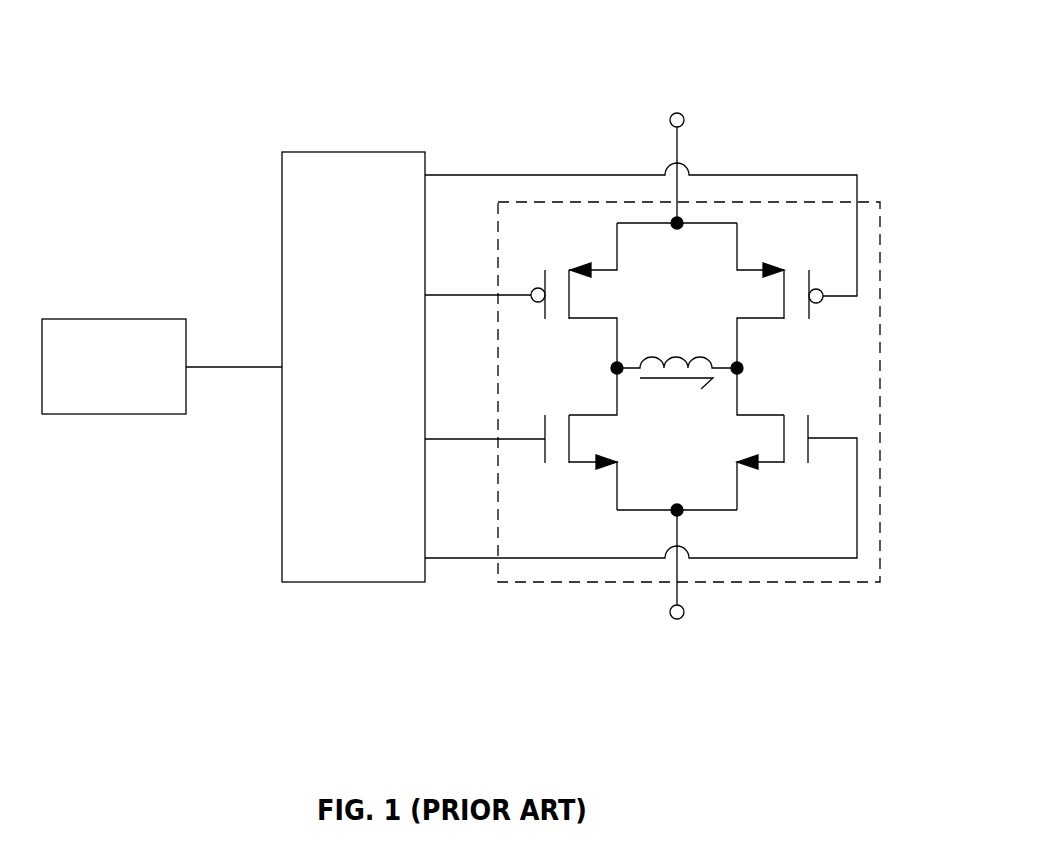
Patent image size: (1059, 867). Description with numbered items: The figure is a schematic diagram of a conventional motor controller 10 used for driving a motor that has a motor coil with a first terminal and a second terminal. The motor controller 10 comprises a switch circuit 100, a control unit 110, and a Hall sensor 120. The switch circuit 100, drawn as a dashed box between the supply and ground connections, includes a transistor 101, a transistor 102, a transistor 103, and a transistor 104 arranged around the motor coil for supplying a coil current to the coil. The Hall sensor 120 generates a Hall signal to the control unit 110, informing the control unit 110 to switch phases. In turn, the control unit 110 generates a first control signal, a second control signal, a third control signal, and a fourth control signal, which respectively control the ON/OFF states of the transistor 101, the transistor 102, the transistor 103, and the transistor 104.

The motor controller 10 is at (760, 32).
The switch circuit 100 is at (537, 585).
The transistor 101 is at (606, 268).
The transistor 102 is at (585, 465).
The transistor 103 is at (748, 268).
The transistor 104 is at (772, 465).
The control unit 110 is at (353, 152).
The Hall sensor 120 is at (113, 319).